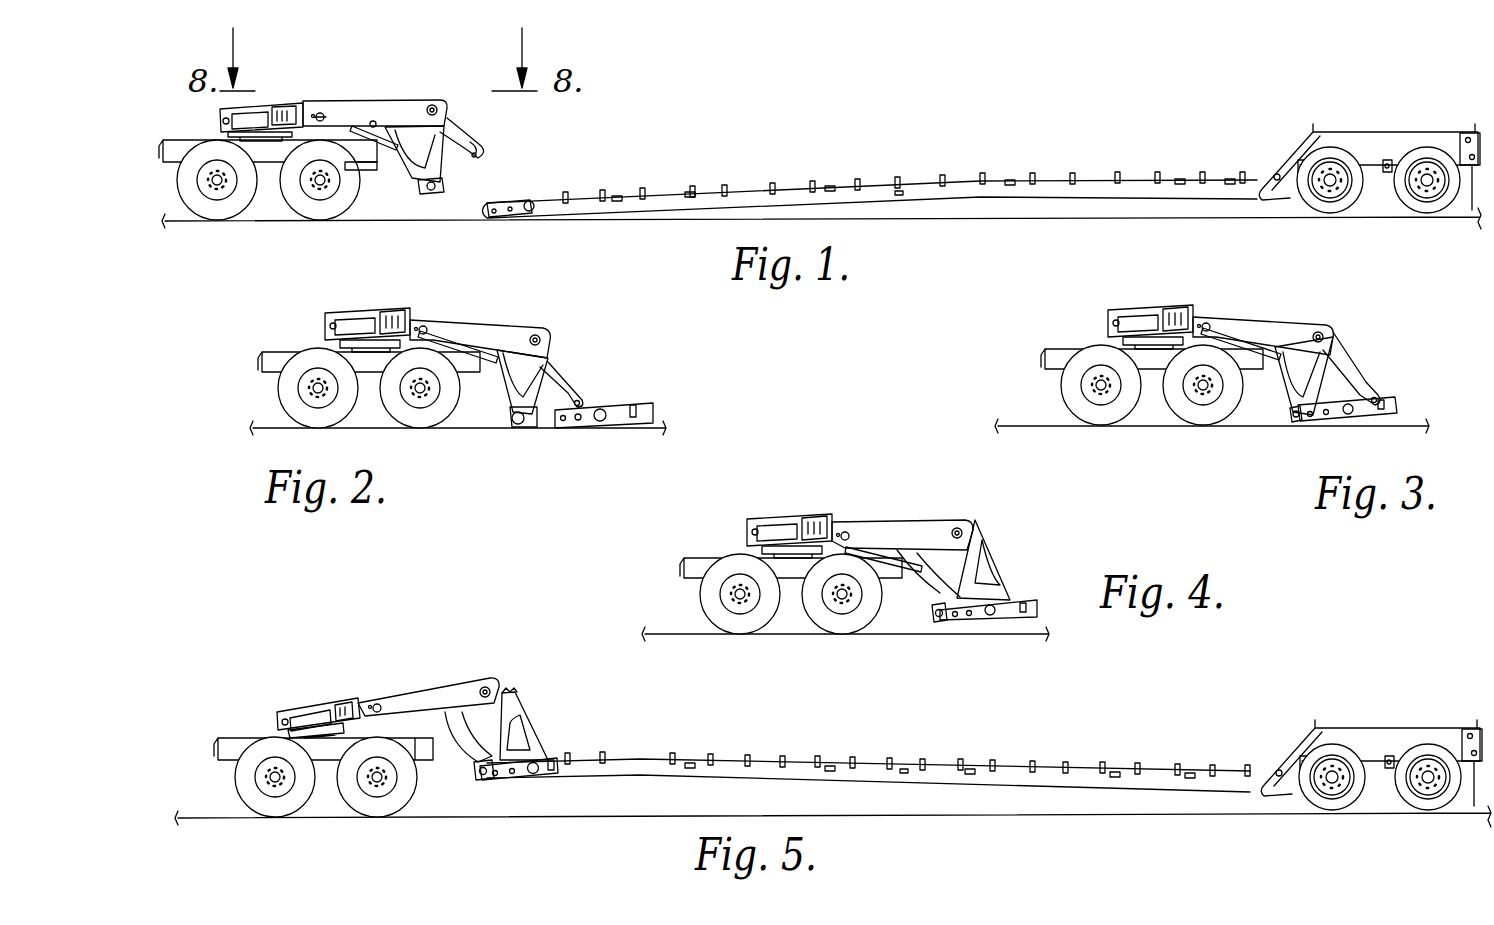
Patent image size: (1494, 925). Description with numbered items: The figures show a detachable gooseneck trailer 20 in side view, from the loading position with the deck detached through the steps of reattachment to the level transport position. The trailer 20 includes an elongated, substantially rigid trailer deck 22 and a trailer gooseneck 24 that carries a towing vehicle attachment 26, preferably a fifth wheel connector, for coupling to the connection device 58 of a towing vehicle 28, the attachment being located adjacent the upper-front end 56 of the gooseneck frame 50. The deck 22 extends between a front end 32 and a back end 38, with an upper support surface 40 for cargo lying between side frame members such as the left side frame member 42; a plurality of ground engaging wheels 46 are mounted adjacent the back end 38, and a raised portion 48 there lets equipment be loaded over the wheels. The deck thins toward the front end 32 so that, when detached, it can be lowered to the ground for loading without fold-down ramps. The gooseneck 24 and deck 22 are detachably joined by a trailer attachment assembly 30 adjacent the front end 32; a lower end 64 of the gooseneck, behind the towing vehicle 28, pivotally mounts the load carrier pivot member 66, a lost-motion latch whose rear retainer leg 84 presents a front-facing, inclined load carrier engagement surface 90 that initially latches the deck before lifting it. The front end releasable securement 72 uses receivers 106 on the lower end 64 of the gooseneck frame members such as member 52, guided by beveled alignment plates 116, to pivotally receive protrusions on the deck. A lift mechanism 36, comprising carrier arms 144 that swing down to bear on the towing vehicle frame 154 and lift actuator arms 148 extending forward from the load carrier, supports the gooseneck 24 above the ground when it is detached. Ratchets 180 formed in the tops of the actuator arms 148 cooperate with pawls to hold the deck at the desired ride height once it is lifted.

In FIG. 1, the trailer 20 is at (982, 159).
In FIG. 5, the trailer 20 is at (959, 730).
In FIG. 1, the trailer deck 22 is at (868, 187).
In FIG. 5, the trailer deck 22 is at (865, 761).
In FIG. 1, the trailer gooseneck 24 is at (378, 109).
In FIG. 2, the trailer gooseneck 24 is at (424, 312).
In FIG. 1, the towing vehicle attachment 26 is at (261, 140).
In FIG. 4, the towing vehicle attachment 26 is at (771, 510).
In FIG. 5, the towing vehicle attachment 26 is at (287, 730).
In FIG. 1, the towing vehicle 28 is at (301, 176).
In FIG. 3, the towing vehicle 28 is at (1112, 385).
In FIG. 4, the towing vehicle 28 is at (768, 558).
In FIG. 5, the towing vehicle 28 is at (264, 827).
In FIG. 1, the trailer attachment assembly 30 is at (488, 156).
In FIG. 3, the trailer attachment assembly 30 is at (1350, 382).
In FIG. 5, the trailer attachment assembly 30 is at (527, 747).
In FIG. 1, the front end 32 is at (480, 216).
In FIG. 3, the front end 32 is at (1302, 423).
In FIG. 4, the front end 32 is at (955, 625).
In FIG. 5, the front end 32 is at (490, 784).
In FIG. 1, the lift mechanism 36 is at (403, 203).
In FIG. 1, the back end 38 is at (1481, 130).
In FIG. 5, the back end 38 is at (1471, 747).
In FIG. 1, the upper support surface 40 is at (852, 186).
In FIG. 5, the upper support surface 40 is at (856, 762).
In FIG. 1, the left side frame member 42 is at (1150, 190).
In FIG. 5, the left side frame member 42 is at (1006, 778).
In FIG. 1, the ground engaging wheels 46 is at (1412, 207).
In FIG. 5, the ground engaging wheels 46 is at (1380, 793).
In FIG. 1, the raised portion 48 is at (1380, 136).
In FIG. 5, the raised portion 48 is at (1370, 742).
In FIG. 1, the gooseneck frame 50 is at (378, 89).
In FIG. 2, the gooseneck frame 50 is at (545, 335).
In FIG. 5, the gooseneck frame 50 is at (445, 716).
In FIG. 1, the left gooseneck frame member 52 is at (415, 107).
In FIG. 5, the left gooseneck frame member 52 is at (410, 702).
In FIG. 2, the upper-front end 56 is at (325, 322).
In FIG. 3, the upper-front end 56 is at (1110, 320).
In FIG. 4, the upper-front end 56 is at (747, 532).
In FIG. 5, the upper-front end 56 is at (276, 720).
In FIG. 1, the towing vehicle connection device 58 is at (258, 135).
In FIG. 2, the towing vehicle connection device 58 is at (396, 347).
In FIG. 3, the towing vehicle connection device 58 is at (1255, 360).
In FIG. 5, the towing vehicle connection device 58 is at (314, 735).
In FIG. 1, the lower end 64 is at (492, 183).
In FIG. 2, the lower end 64 is at (492, 411).
In FIG. 4, the lower end 64 is at (924, 603).
In FIG. 1, the load carrier pivot member 66 is at (455, 138).
In FIG. 3, the load carrier pivot member 66 is at (1340, 375).
In FIG. 4, the load carrier pivot member 66 is at (990, 566).
In FIG. 5, the load carrier pivot member 66 is at (523, 712).
In FIG. 3, the front end releasable securement 72 is at (1251, 459).
In FIG. 1, the retainer leg 84 is at (472, 148).
In FIG. 2, the retainer leg 84 is at (575, 392).
In FIG. 3, the retainer leg 84 is at (1358, 395).
In FIG. 1, the load carrier engagement surface 90 is at (470, 155).
In FIG. 2, the load carrier engagement surface 90 is at (585, 405).
In FIG. 3, the load carrier engagement surface 90 is at (1345, 405).
In FIG. 1, the receivers 106 is at (425, 190).
In FIG. 2, the receivers 106 is at (518, 426).
In FIG. 4, the receivers 106 is at (938, 622).
In FIG. 5, the receivers 106 is at (478, 782).
In FIG. 2, the alignment plates 116 is at (542, 423).
In FIG. 1, the carrier arms 144 is at (362, 140).
In FIG. 2, the carrier arms 144 is at (482, 356).
In FIG. 3, the carrier arms 144 is at (1257, 350).
In FIG. 1, the lift actuator arms 148 is at (374, 121).
In FIG. 1, the towing vehicle frame 154 is at (180, 145).
In FIG. 2, the towing vehicle frame 154 is at (262, 364).
In FIG. 3, the towing vehicle frame 154 is at (1253, 362).
In FIG. 4, the towing vehicle frame 154 is at (893, 566).
In FIG. 5, the ratchets 180 is at (510, 688).